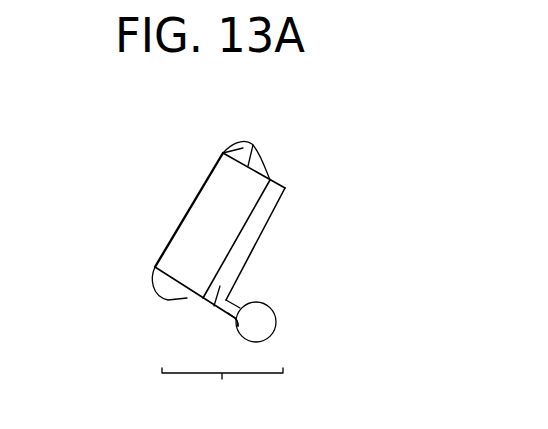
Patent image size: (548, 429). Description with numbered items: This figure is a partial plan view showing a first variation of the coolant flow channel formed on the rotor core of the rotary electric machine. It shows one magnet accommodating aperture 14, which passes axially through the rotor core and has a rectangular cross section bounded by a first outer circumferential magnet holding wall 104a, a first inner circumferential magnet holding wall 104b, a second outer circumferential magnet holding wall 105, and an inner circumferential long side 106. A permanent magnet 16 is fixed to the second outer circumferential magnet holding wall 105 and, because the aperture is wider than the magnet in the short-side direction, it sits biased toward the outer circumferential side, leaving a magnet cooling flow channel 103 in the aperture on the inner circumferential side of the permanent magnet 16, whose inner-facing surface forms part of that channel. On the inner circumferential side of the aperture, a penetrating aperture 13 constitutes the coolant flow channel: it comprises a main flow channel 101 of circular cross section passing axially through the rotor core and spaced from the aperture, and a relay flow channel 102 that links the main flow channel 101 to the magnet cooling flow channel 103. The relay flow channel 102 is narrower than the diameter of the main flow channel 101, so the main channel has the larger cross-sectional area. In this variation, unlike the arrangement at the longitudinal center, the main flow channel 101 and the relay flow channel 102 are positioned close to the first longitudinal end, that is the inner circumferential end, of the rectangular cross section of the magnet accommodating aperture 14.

The penetrating aperture 13 is at (222, 384).
The magnet accommodating aperture 14 is at (253, 143).
The permanent magnet 16 is at (207, 237).
The main flow channel 101 is at (264, 328).
The relay flow channel 102 is at (232, 323).
The magnet cooling flow channel 103 is at (217, 308).
The first outer circumferential magnet holding wall 104a is at (270, 180).
The first inner circumferential magnet holding wall 104b is at (207, 304).
The second outer circumferential magnet holding wall 105 is at (155, 267).
The inner circumferential long side 106 is at (223, 153).